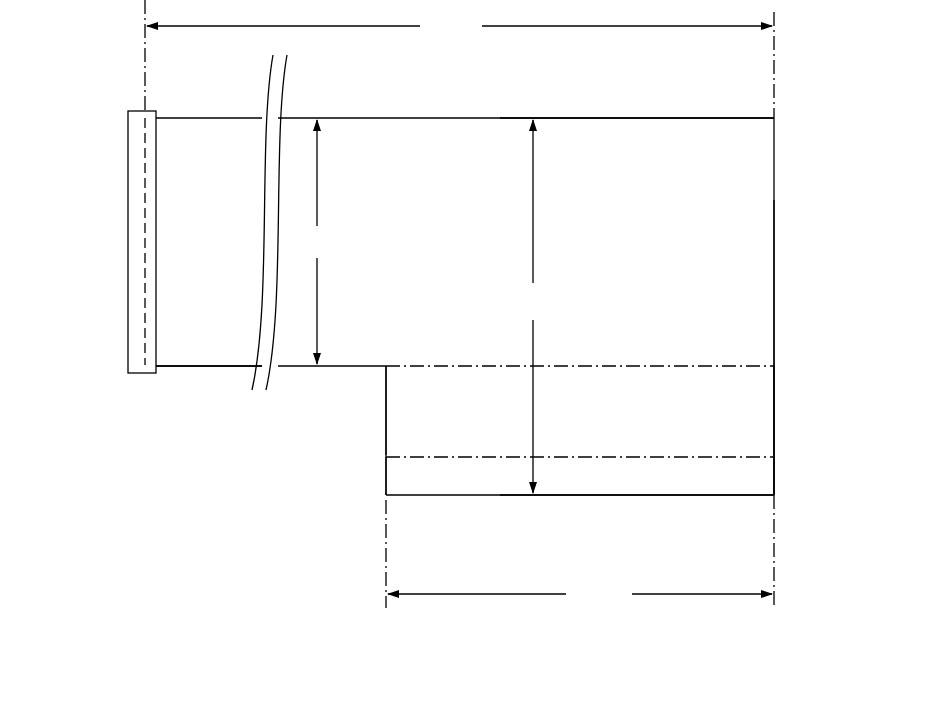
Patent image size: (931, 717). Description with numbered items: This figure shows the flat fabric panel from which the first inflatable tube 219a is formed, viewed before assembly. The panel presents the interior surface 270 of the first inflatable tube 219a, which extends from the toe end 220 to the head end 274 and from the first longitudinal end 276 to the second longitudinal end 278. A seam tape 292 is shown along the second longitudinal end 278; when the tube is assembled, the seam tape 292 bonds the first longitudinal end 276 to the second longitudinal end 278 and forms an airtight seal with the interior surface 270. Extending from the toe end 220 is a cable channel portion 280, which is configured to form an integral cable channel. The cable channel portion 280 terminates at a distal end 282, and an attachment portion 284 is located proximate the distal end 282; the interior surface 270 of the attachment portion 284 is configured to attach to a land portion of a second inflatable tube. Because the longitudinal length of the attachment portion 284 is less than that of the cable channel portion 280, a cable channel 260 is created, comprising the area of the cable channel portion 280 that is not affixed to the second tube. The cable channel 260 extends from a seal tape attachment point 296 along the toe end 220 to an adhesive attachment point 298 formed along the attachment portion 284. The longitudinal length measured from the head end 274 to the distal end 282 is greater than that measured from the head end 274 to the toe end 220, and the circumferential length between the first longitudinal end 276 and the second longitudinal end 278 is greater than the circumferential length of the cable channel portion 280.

The first inflatable tube 219a is at (90, 90).
The seam tape 292 is at (132, 204).
The second longitudinal end 278 is at (148, 258).
The interior surface 270 is at (444, 254).
The head end 274 is at (610, 118).
The first longitudinal end 276 is at (774, 222).
The distal end 282 is at (670, 495).
The toe end 220 is at (218, 373).
The seal tape attachment point 296 is at (636, 366).
The adhesive attachment point 298 is at (672, 455).
The cable channel 260 is at (384, 368).
The attachment portion 284 is at (384, 459).
The cable channel portion 280 is at (794, 368).